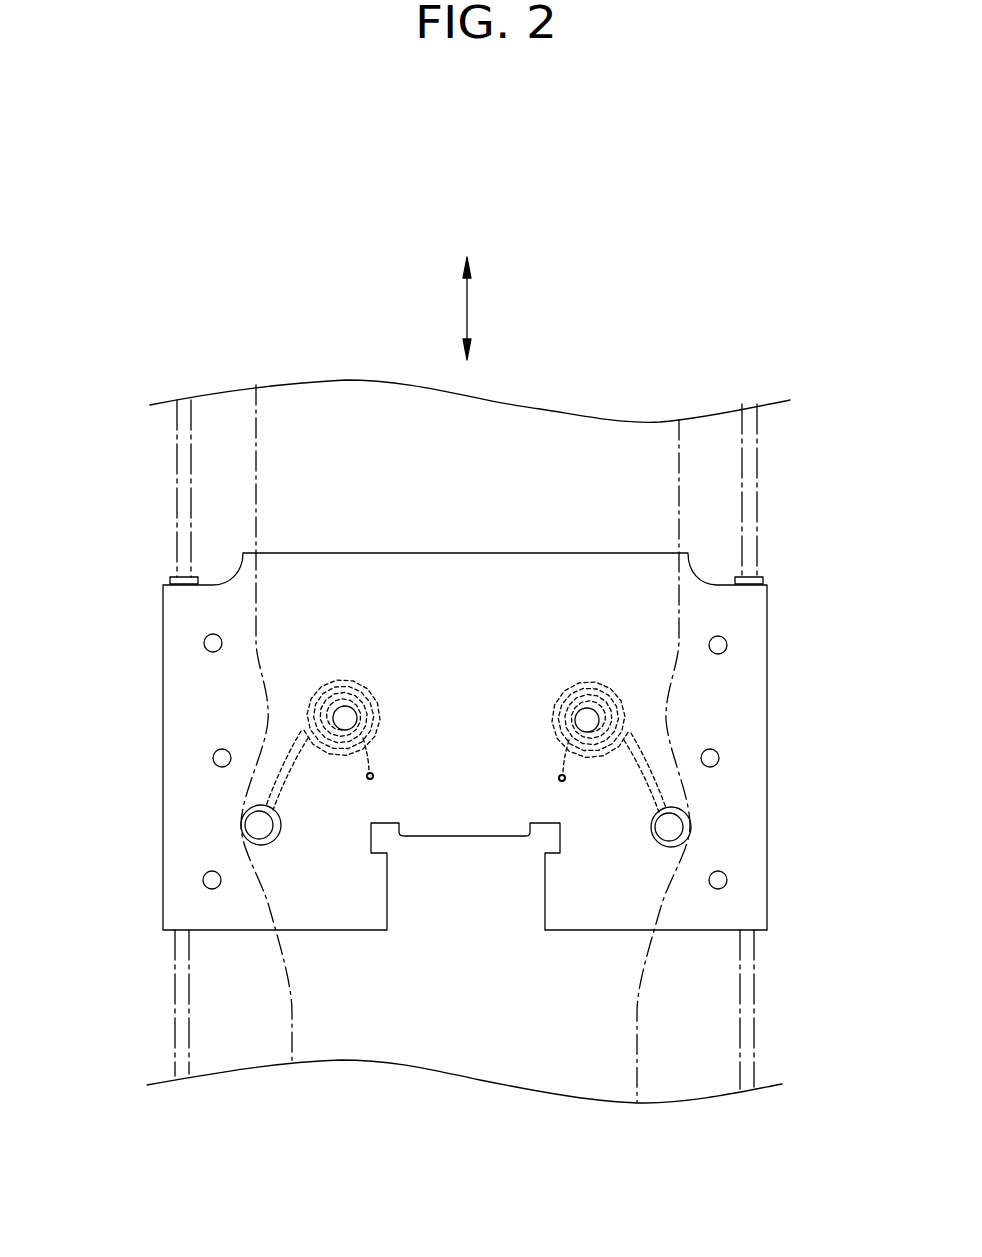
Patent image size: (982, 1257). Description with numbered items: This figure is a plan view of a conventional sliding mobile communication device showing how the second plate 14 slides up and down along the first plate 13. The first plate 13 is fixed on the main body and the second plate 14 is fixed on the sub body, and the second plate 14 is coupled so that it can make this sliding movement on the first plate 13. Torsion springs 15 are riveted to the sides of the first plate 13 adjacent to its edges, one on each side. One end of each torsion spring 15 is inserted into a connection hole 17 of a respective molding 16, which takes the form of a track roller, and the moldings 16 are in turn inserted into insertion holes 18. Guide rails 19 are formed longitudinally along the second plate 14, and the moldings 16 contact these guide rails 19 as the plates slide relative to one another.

The first plate 13 is at (183, 817).
The second plate 14 is at (335, 1010).
The torsion spring 15 is at (638, 722).
The molding 16 is at (680, 823).
The connection hole 17 is at (687, 812).
The insertion hole 18 is at (687, 837).
The guide rail 19 is at (256, 453).